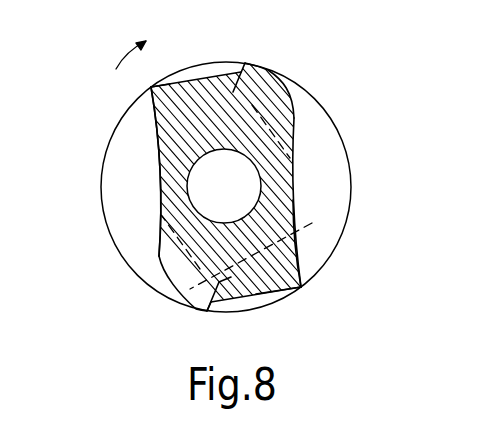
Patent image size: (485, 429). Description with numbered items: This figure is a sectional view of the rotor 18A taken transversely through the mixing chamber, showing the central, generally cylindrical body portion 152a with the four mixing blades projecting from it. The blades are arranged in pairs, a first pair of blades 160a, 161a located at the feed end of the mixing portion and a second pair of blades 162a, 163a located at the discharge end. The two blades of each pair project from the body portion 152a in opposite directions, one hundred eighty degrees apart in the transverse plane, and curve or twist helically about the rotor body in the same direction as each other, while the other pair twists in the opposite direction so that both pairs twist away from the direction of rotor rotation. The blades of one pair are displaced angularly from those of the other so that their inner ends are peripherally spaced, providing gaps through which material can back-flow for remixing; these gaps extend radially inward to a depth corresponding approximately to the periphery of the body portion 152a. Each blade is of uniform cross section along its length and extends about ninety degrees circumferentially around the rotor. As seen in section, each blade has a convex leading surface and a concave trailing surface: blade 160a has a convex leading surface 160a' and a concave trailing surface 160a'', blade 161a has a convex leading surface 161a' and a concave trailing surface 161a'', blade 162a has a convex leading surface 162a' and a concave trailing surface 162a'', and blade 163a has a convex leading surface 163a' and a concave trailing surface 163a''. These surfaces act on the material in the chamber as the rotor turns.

The rotor 18A is at (357, 183).
The central body portion 152a is at (266, 83).
The mixing blade 160a is at (159, 299).
The convex leading surface 160a' is at (114, 187).
The concave trailing surface 160a'' is at (244, 309).
The mixing blade 161a is at (298, 81).
The convex leading surface 161a' is at (342, 180).
The concave trailing surface 161a'' is at (278, 53).
The mixing blade 162a is at (299, 282).
The convex leading surface 162a' is at (309, 309).
The concave trailing surface 162a'' is at (352, 243).
The mixing blade 163a is at (187, 49).
The convex leading surface 163a' is at (199, 59).
The concave trailing surface 163a'' is at (110, 171).